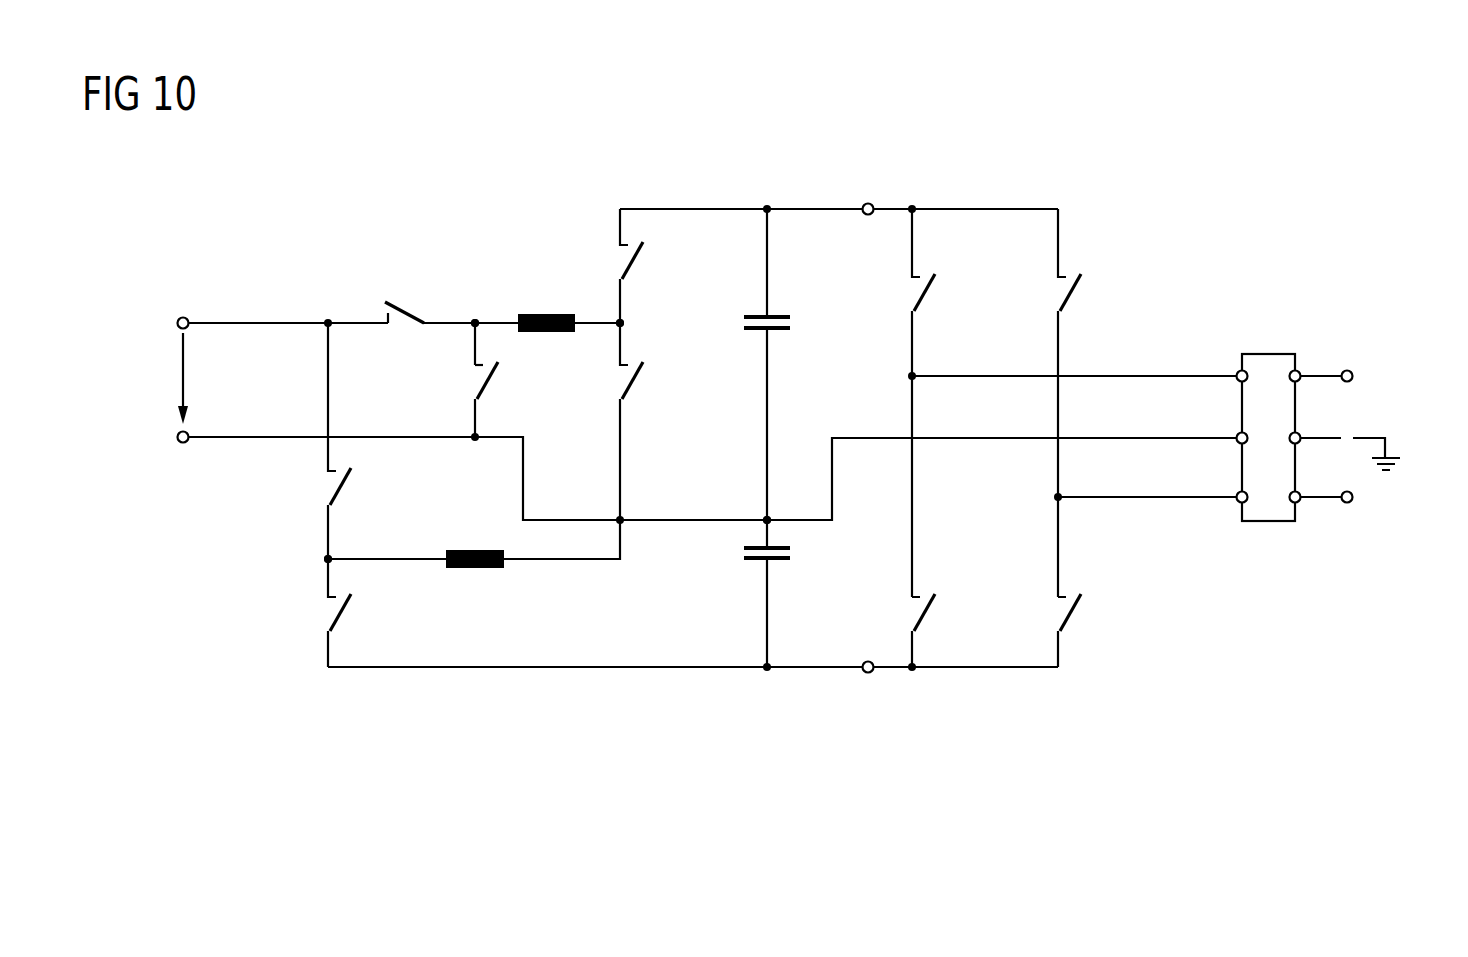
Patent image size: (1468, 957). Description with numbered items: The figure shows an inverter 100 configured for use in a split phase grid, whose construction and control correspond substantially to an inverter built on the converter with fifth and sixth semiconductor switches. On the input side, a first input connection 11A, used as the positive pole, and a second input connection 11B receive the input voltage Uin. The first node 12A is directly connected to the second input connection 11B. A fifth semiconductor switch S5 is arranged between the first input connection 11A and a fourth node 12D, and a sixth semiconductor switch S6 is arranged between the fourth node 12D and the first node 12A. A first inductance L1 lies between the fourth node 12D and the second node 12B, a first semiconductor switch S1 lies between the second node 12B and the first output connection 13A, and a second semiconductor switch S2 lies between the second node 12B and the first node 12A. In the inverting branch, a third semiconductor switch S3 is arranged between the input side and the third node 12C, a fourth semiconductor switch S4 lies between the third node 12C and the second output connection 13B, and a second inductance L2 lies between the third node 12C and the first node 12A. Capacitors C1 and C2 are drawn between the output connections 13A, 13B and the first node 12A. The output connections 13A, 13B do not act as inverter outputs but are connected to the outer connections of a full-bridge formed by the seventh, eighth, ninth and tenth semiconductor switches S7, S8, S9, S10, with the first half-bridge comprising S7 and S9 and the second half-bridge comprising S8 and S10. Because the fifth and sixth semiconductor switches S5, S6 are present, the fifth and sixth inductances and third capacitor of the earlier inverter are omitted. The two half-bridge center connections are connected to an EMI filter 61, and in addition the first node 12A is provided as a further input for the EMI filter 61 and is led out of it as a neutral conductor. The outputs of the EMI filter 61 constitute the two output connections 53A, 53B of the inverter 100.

The inverter 100 is at (272, 242).
The first input connection 11A is at (176, 323).
The second input connection 11B is at (176, 437).
The input voltage Uin is at (180, 376).
The first node 12A is at (764, 517).
The second node 12B is at (626, 323).
The third node 12C is at (324, 559).
The fourth node 12D is at (475, 316).
The first output connection 13A is at (868, 202).
The second output connection 13B is at (868, 673).
The first semiconductor switch S1 is at (636, 263).
The second semiconductor switch S2 is at (636, 383).
The third semiconductor switch S3 is at (344, 492).
The fourth semiconductor switch S4 is at (344, 617).
The fifth semiconductor switch S5 is at (405, 303).
The sixth semiconductor switch S6 is at (491, 385).
The seventh semiconductor switch S7 is at (928, 296).
The eighth semiconductor switch S8 is at (1074, 296).
The ninth semiconductor switch S9 is at (928, 619).
The tenth semiconductor switch S10 is at (1074, 619).
The first inductance L1 is at (548, 312).
The second inductance L2 is at (477, 570).
The first capacitor C1 is at (776, 333).
The second capacitor C2 is at (776, 563).
The first output connection of the inverter 53A is at (1353, 376).
The second output connection of the inverter 53B is at (1353, 497).
The EMI filter 61 is at (1268, 523).